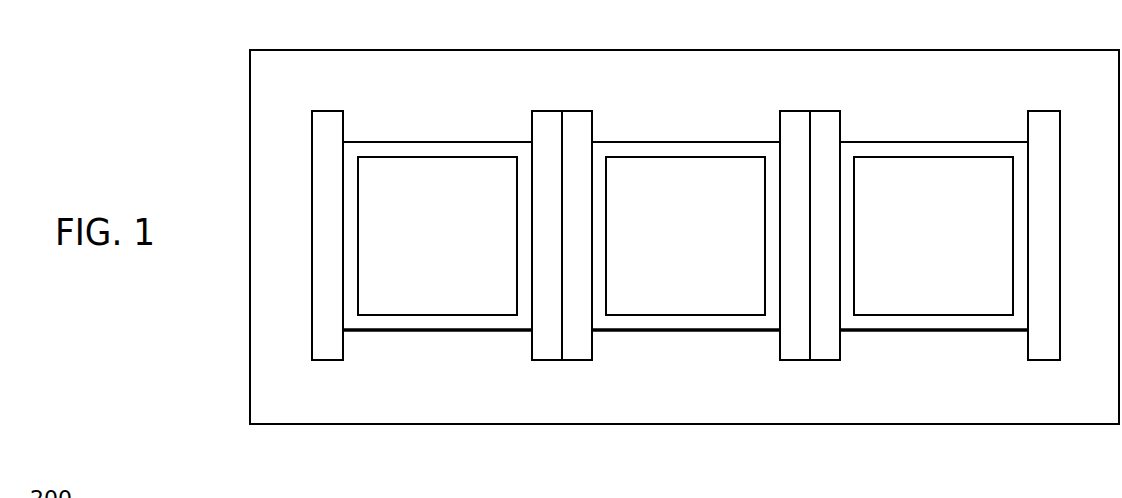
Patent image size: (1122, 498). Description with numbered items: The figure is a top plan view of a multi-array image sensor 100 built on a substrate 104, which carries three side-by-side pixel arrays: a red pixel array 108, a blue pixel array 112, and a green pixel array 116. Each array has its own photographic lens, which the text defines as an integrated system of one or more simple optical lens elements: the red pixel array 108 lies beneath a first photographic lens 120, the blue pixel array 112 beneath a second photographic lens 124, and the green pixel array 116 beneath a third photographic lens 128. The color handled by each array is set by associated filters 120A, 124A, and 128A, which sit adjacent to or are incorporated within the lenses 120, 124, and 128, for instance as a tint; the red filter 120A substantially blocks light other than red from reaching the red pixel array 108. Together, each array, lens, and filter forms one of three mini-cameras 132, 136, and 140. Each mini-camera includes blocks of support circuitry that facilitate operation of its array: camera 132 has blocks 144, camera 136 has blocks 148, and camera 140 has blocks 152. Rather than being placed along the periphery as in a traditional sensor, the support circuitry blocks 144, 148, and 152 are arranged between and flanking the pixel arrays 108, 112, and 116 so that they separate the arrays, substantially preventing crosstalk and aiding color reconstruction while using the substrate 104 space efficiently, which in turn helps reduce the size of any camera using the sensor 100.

The multi-array image sensor 100 is at (214, 80).
The substrate 104 is at (250, 362).
The red pixel array 108 is at (414, 202).
The blue pixel array 112 is at (662, 202).
The green pixel array 116 is at (910, 202).
The first photographic lens 120 is at (425, 140).
The second photographic lens 124 is at (686, 140).
The third photographic lens 128 is at (942, 140).
The red filter 120A is at (466, 332).
The filter 124A is at (705, 332).
The filter 128A is at (952, 332).
The mini-camera 132 is at (482, 100).
The mini-camera 136 is at (685, 110).
The mini-camera 140 is at (964, 115).
The blocks of support circuitry 144 is at (340, 364).
The blocks of support circuitry 148 is at (582, 364).
The blocks of support circuitry 152 is at (830, 364).